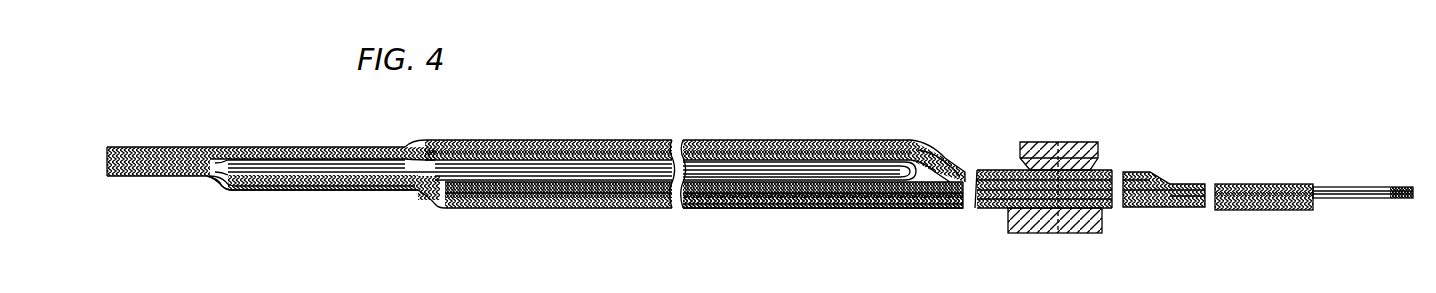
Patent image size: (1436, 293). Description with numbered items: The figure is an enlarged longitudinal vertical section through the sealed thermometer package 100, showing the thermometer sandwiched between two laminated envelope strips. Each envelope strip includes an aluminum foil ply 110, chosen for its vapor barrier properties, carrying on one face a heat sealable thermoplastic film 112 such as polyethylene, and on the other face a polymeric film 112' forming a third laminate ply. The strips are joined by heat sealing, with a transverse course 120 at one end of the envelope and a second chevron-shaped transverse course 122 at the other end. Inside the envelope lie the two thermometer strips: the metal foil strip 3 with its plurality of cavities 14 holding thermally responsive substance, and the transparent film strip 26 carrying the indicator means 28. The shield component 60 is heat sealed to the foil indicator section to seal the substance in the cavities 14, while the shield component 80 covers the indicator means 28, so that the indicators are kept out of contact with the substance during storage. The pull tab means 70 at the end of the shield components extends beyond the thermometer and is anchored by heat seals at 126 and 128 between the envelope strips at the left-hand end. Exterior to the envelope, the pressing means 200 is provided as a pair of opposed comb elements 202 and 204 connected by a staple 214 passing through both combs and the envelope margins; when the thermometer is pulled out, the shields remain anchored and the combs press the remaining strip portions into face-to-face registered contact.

The metal foil thermometer strip 3 is at (935, 196).
The cavities 14 is at (850, 196).
The transparent film thermometer strip 26 is at (930, 172).
The indicator means 28 is at (806, 158).
The shield component 60 is at (892, 182).
The pull tab means 70 is at (264, 172).
The shield component 80 is at (872, 164).
The thermometer package 100 is at (644, 128).
The aluminum foil ply 110 is at (514, 152).
The thermoplastic film 112 is at (879, 174).
The polymeric film 112' is at (877, 185).
The transverse heat seal course 120 is at (141, 150).
The second transverse heat seal course 122 is at (1255, 190).
The heat seal 126 is at (292, 158).
The heat seal 128 is at (294, 192).
The pressing means 200 is at (1064, 176).
The comb element 202 is at (1100, 146).
The comb element 204 is at (1097, 234).
The staple 214 is at (1062, 142).